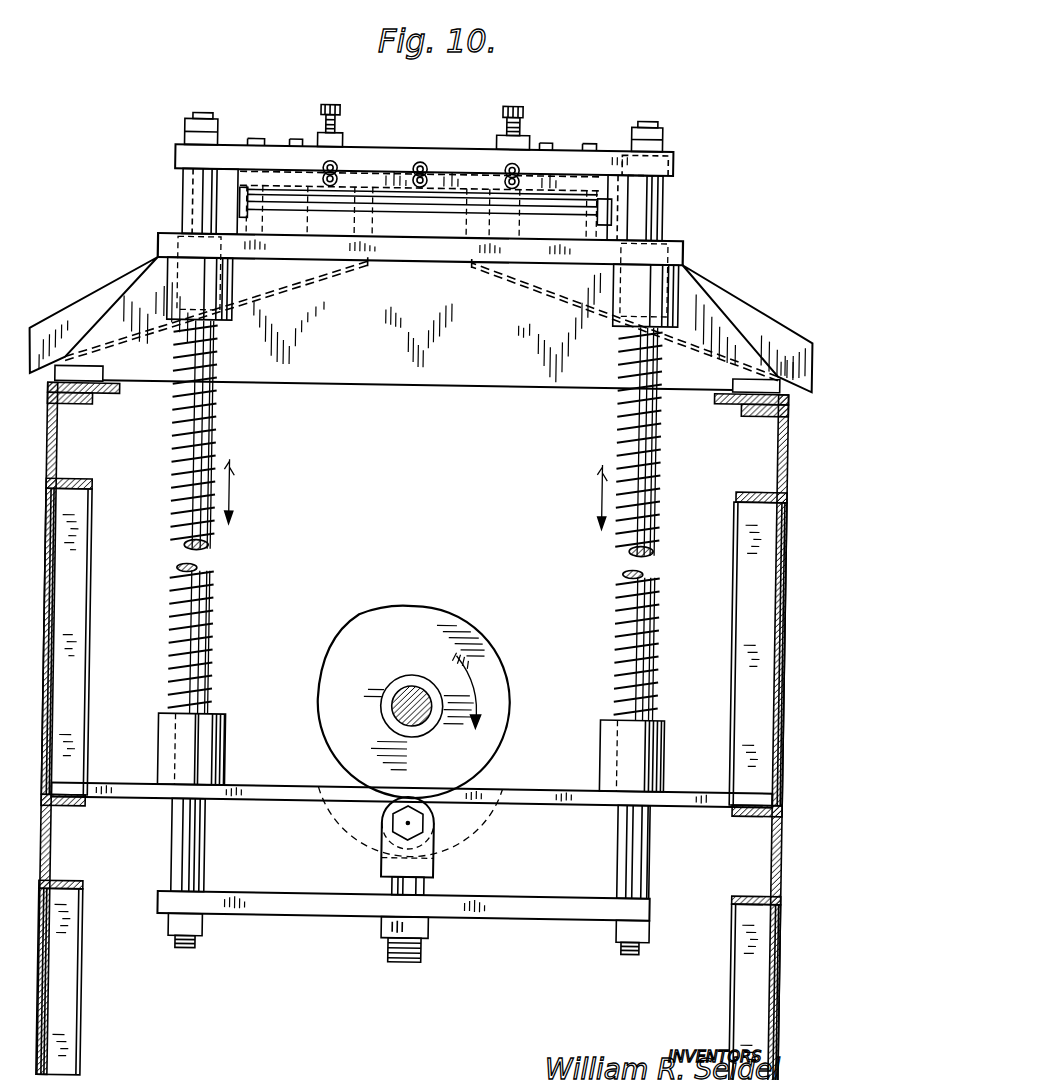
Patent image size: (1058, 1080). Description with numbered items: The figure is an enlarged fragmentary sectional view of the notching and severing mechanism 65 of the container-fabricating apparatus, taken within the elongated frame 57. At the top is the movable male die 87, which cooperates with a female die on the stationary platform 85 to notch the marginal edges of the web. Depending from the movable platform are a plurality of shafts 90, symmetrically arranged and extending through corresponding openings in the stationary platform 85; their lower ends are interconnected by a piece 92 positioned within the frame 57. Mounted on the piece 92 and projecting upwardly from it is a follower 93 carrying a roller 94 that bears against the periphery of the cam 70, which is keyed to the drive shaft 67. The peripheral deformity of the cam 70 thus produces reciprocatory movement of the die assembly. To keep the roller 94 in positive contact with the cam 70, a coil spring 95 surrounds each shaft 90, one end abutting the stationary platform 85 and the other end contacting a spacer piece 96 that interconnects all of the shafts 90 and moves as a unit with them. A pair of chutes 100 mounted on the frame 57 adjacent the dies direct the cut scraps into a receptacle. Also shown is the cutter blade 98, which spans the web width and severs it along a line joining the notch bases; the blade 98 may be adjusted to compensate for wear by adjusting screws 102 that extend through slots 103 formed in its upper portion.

The notching and severing mechanism 65 is at (235, 108).
The male die 87 is at (277, 181).
The cutter blade 98 is at (387, 198).
The adjusting screws 102 is at (318, 172).
The slots 103 is at (333, 170).
The shafts 90 is at (195, 199).
The stationary platform 85 is at (416, 260).
The chutes 100 is at (60, 332).
The frame 57 is at (772, 857).
The coil spring 95 is at (215, 418).
The cam 70 is at (449, 627).
The drive shaft 67 is at (399, 700).
The spacer piece 96 is at (281, 790).
The piece 92 is at (336, 909).
The follower 93 is at (381, 869).
The roller 94 is at (440, 826).